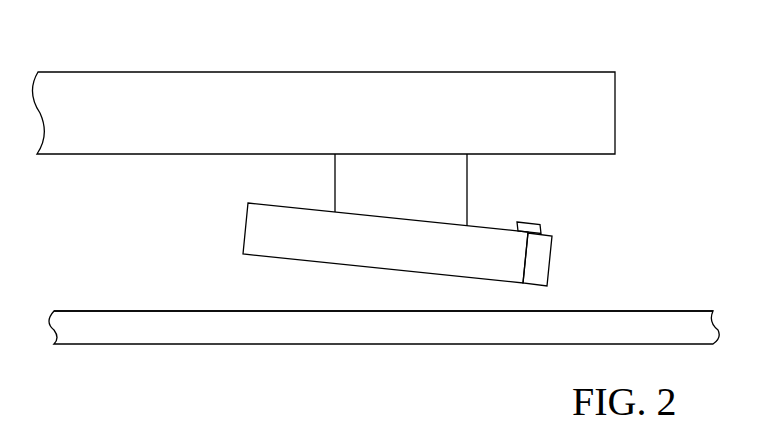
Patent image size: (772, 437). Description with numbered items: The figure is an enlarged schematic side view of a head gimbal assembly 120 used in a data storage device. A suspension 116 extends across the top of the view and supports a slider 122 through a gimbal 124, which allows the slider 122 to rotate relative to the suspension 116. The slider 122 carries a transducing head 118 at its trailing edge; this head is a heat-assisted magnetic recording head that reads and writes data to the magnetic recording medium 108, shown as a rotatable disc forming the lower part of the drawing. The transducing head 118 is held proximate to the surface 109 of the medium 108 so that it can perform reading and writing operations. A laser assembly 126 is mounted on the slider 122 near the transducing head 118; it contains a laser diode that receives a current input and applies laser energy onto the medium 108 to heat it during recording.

The suspension 116 is at (383, 72).
The magnetic recording medium 108 is at (590, 332).
The surface of medium 109 is at (145, 311).
The head gimbal assembly 120 is at (466, 179).
The slider 122 is at (310, 222).
The gimbal 124 is at (433, 192).
The transducing head 118 is at (541, 258).
The laser assembly 126 is at (529, 223).